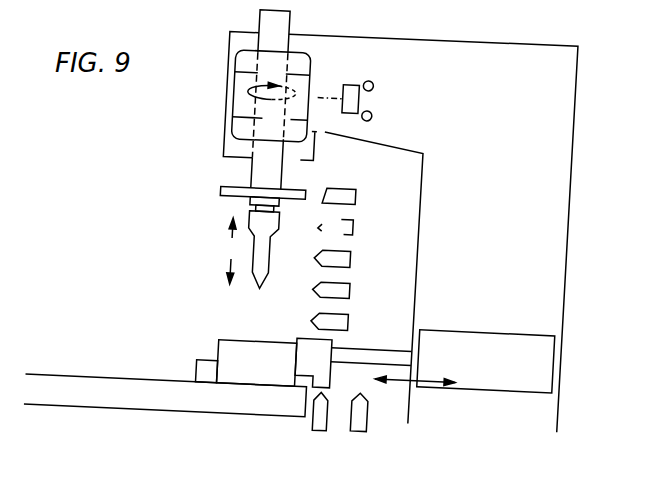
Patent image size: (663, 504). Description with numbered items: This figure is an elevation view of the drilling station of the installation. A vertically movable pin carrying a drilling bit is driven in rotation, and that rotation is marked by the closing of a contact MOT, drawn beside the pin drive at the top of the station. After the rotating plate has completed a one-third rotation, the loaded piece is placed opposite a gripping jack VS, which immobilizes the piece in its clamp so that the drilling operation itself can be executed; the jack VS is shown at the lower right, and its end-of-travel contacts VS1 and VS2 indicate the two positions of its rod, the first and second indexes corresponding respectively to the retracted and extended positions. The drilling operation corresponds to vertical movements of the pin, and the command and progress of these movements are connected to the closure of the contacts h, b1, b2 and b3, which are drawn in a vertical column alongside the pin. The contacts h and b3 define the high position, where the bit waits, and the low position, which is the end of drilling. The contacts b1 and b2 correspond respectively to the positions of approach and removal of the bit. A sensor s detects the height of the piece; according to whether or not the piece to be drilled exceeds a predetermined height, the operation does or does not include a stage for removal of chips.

The contact MOT is at (379, 85).
The contact h is at (365, 181).
The contact b1 is at (365, 211).
The contact b2 is at (364, 243).
The contact b3 is at (365, 274).
The sensor s is at (365, 306).
The gripping jack VS is at (569, 346).
The end-of-travel contact of gripping jack VS1 is at (381, 428).
The end-of-travel contact of gripping jack VS2 is at (342, 428).